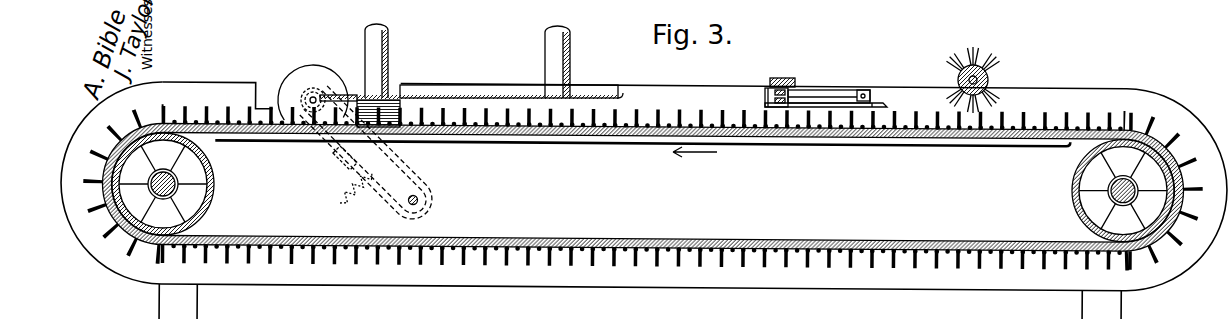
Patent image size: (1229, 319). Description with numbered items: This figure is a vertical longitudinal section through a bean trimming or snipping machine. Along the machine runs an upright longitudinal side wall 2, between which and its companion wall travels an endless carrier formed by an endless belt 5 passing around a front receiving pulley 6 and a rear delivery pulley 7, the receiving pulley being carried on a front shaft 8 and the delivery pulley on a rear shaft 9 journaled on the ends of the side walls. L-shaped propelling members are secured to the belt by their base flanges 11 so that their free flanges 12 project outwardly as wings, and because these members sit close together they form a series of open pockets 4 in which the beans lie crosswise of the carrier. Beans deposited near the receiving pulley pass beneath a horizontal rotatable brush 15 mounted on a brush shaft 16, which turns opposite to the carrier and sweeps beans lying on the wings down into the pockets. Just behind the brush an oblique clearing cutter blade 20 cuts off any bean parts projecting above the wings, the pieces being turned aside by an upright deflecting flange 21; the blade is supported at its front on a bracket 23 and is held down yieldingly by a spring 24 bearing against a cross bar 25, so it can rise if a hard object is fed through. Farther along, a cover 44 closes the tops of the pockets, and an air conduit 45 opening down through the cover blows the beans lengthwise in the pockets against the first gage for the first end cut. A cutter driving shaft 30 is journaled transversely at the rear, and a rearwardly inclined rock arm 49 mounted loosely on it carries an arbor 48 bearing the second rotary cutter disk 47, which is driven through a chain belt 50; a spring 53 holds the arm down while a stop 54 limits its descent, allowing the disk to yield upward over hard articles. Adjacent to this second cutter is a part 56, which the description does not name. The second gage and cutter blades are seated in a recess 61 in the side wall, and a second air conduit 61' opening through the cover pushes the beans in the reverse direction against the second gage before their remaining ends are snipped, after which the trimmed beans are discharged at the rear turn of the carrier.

The longitudinal side wall 2 is at (717, 97).
The pockets 4 is at (647, 115).
The endless belt 5 is at (550, 142).
The front receiving pulley 6 is at (1070, 183).
The rear delivery pulley 7 is at (217, 186).
The front shaft 8 is at (1073, 212).
The rear shaft 9 is at (205, 202).
The base flange 11 is at (490, 131).
The free flange 12 is at (488, 113).
The rotatable brush 15 is at (992, 75).
The brush shaft 16 is at (958, 80).
The clearing cutter blade 20 is at (827, 104).
The deflecting flange 21 is at (850, 92).
The bracket 23 is at (872, 107).
The spring 24 is at (803, 107).
The cross bar 25 is at (777, 77).
The cutter driving shaft 30 is at (420, 200).
The cover 44 is at (427, 97).
The air conduit 45 is at (560, 78).
The rotary cutter disk 47 is at (300, 72).
The arbor 48 is at (317, 97).
The rock arm 49 is at (392, 190).
The chain belt 50 is at (420, 181).
The spring 53 is at (345, 188).
The stop 54 is at (337, 152).
The hatched block 56 is at (390, 102).
The recess 61 is at (218, 81).
The air conduit 61' is at (354, 49).